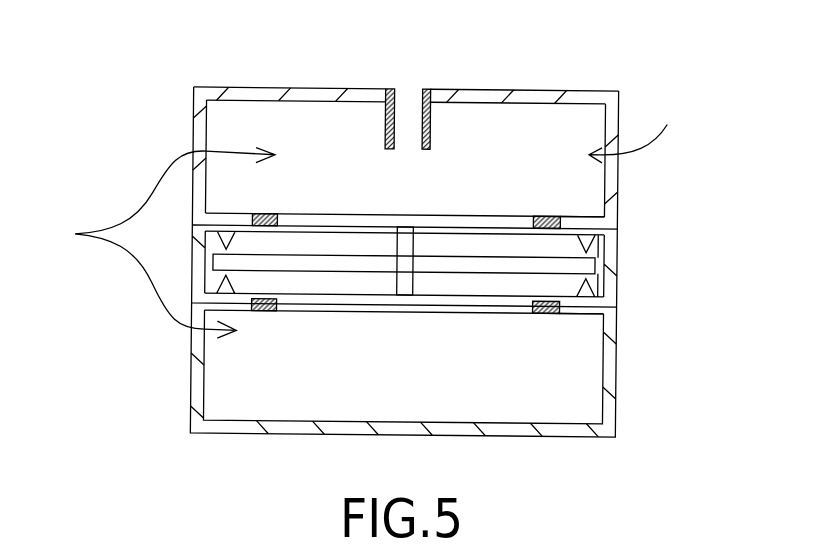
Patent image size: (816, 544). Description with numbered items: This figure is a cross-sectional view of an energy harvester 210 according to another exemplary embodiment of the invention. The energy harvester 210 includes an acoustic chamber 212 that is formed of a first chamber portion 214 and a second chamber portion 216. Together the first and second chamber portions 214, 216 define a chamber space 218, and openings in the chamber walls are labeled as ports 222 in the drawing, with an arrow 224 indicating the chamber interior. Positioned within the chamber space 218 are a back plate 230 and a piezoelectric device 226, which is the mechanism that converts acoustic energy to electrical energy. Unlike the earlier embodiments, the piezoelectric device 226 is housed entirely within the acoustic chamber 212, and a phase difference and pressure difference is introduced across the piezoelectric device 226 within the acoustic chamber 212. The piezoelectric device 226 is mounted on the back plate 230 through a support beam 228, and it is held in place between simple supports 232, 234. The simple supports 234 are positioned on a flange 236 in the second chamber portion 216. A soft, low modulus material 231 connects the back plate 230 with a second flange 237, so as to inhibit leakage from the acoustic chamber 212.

The energy harvester 210 is at (383, 242).
The acoustic chamber 212 is at (298, 108).
The first chamber portion 214 is at (533, 98).
The second chamber portion 216 is at (577, 430).
The chamber space 218 is at (152, 241).
The port 222 is at (404, 98).
The chamber 224 is at (648, 131).
The piezoelectric device 226 is at (426, 258).
The support beam 228 is at (407, 240).
The back plate 230 is at (418, 215).
The soft, low modulus material 231 is at (262, 214).
The simple support 232 is at (584, 238).
The simple support 234 is at (584, 282).
The flange 236 is at (594, 305).
The second flange 237 is at (596, 213).